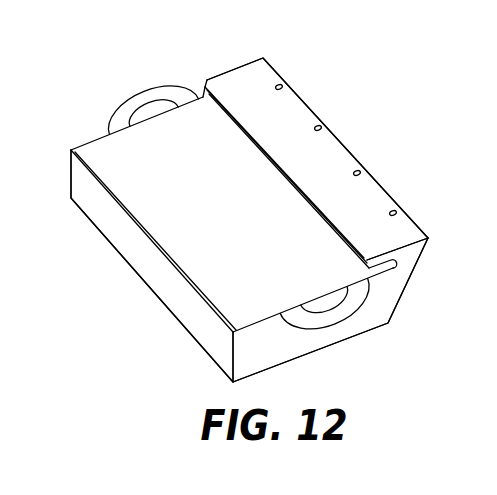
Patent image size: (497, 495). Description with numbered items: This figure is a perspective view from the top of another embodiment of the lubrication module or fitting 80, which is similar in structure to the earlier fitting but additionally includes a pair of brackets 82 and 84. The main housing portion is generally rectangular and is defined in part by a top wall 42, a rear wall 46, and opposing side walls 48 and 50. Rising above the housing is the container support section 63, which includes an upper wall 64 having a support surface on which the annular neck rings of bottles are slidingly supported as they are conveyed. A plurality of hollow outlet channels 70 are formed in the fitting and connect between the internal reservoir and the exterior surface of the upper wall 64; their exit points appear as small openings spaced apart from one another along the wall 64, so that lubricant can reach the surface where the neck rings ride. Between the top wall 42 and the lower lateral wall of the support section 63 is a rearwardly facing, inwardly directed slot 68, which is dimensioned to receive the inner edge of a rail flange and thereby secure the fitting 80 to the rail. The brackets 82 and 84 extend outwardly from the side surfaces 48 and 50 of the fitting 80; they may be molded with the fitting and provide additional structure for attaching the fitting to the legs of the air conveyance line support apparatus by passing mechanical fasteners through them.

The top wall 42 is at (107, 163).
The rear wall 46 is at (153, 267).
The side wall 48 is at (200, 97).
The side wall 50 is at (383, 298).
The container support section 63 is at (231, 63).
The upper wall 64 is at (293, 115).
The slot 68 is at (292, 195).
The outlet channels 70 is at (397, 203).
The lubrication module 80 is at (118, 322).
The bracket 82 is at (130, 103).
The bracket 84 is at (345, 312).